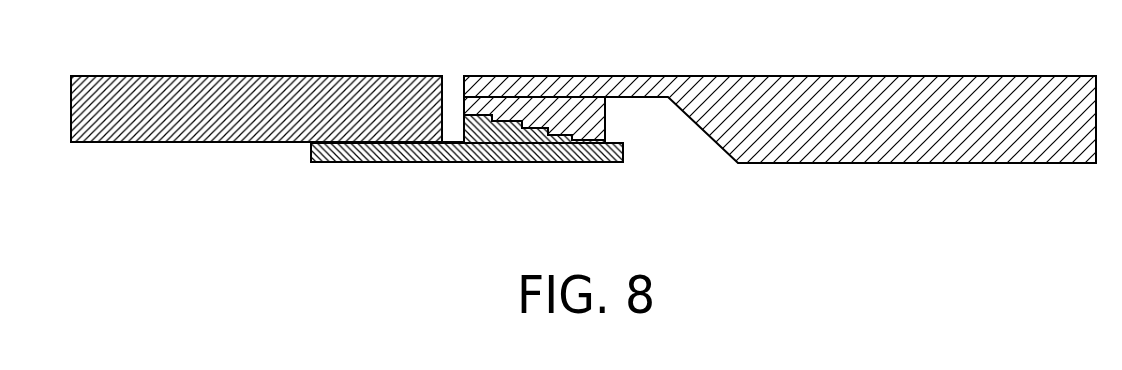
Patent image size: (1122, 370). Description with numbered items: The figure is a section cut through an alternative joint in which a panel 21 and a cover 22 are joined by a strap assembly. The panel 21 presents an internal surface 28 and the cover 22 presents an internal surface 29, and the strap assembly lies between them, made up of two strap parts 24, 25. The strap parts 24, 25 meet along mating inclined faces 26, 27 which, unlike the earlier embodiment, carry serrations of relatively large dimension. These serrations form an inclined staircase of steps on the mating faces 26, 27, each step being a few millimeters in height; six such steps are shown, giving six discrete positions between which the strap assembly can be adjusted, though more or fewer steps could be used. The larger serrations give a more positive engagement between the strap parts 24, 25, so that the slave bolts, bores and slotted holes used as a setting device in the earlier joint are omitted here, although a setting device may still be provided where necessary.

The panel 21 is at (852, 88).
The cover 22 is at (262, 86).
The strap part 24 is at (550, 110).
The strap part 25 is at (407, 163).
The mating inclined face 26 is at (529, 129).
The mating inclined face 27 is at (585, 136).
The internal surface of panel 28 is at (929, 165).
The internal surface of cover 29 is at (259, 143).